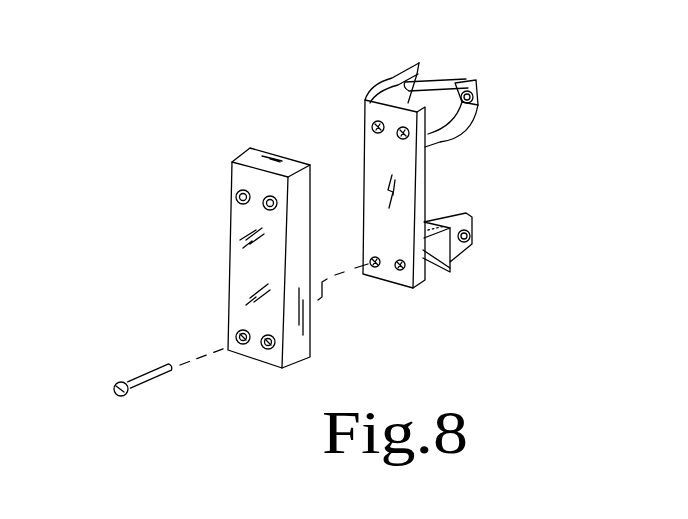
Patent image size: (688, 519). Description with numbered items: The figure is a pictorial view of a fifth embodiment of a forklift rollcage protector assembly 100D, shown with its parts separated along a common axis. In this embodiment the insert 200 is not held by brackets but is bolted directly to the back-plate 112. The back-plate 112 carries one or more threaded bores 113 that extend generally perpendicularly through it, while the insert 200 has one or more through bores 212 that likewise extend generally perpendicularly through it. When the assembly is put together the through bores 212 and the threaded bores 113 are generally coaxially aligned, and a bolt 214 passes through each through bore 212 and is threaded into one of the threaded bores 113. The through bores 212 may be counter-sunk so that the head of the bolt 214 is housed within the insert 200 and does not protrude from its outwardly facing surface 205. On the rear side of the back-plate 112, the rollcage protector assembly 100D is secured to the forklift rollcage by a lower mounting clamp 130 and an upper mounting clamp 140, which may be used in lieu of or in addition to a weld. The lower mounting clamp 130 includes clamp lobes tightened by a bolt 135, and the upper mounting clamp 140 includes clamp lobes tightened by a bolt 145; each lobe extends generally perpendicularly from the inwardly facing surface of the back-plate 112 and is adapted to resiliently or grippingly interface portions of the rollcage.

The rollcage protector assembly 100D is at (182, 95).
The back-plate 112 is at (346, 150).
The threaded bores 113 is at (375, 267).
The lower mounting clamp 130 is at (440, 278).
The bolt 135 is at (433, 222).
The upper mounting clamp 140 is at (377, 66).
The bolt 145 is at (438, 82).
The insert 200 is at (220, 231).
The outwardly facing surface 205 is at (247, 262).
The through bores 212 is at (243, 344).
The bolt 214 is at (156, 368).